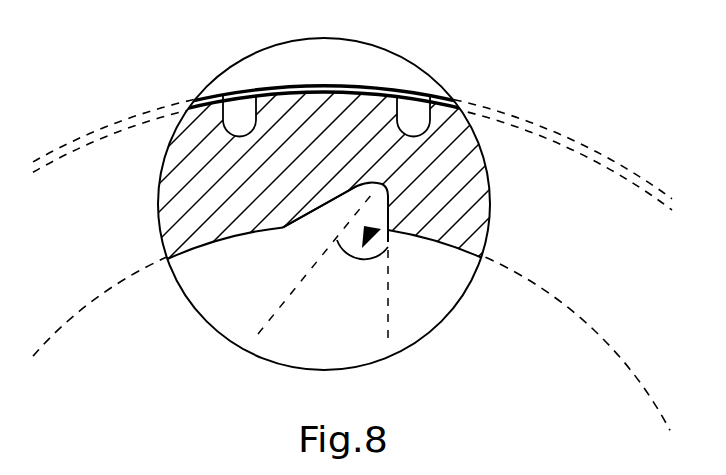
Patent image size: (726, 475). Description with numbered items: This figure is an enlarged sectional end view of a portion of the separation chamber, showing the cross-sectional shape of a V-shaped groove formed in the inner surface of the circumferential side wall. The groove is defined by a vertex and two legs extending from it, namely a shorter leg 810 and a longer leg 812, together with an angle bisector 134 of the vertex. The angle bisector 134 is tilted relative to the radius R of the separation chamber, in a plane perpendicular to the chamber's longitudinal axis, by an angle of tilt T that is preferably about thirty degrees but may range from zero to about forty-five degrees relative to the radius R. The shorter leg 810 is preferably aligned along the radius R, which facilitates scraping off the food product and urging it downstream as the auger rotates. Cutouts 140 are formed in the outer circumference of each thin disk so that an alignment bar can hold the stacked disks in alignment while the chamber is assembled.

The cutouts 140 is at (238, 120).
The shorter leg 810 is at (388, 218).
The longer leg 812 is at (322, 209).
The angle bisector 134 is at (314, 272).
The radius R is at (388, 323).
The angle of tilt T is at (392, 224).